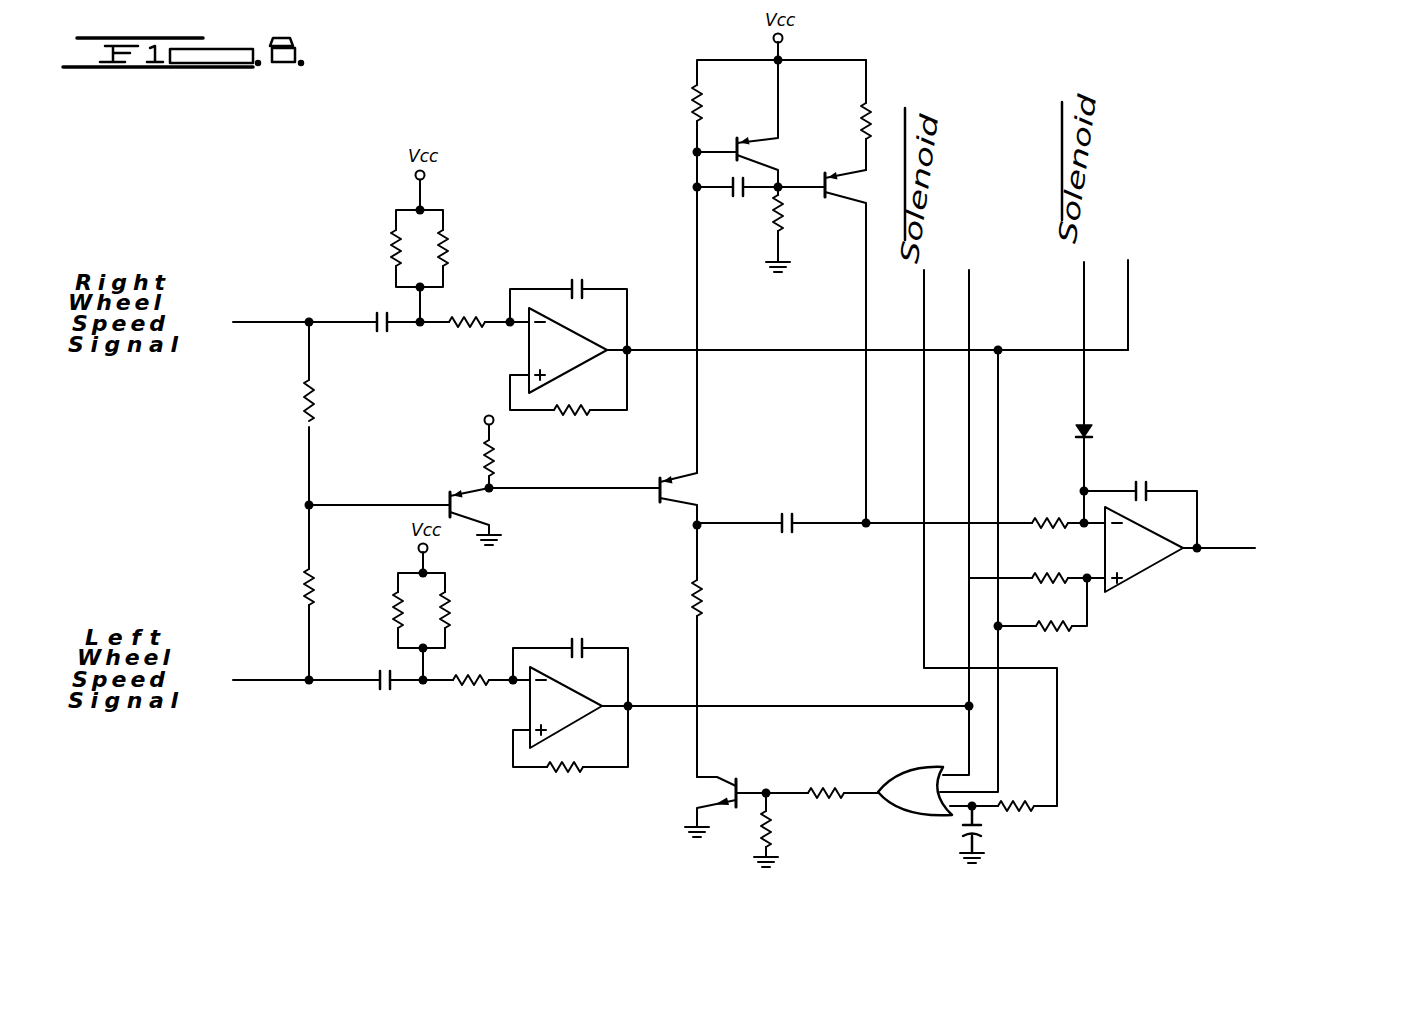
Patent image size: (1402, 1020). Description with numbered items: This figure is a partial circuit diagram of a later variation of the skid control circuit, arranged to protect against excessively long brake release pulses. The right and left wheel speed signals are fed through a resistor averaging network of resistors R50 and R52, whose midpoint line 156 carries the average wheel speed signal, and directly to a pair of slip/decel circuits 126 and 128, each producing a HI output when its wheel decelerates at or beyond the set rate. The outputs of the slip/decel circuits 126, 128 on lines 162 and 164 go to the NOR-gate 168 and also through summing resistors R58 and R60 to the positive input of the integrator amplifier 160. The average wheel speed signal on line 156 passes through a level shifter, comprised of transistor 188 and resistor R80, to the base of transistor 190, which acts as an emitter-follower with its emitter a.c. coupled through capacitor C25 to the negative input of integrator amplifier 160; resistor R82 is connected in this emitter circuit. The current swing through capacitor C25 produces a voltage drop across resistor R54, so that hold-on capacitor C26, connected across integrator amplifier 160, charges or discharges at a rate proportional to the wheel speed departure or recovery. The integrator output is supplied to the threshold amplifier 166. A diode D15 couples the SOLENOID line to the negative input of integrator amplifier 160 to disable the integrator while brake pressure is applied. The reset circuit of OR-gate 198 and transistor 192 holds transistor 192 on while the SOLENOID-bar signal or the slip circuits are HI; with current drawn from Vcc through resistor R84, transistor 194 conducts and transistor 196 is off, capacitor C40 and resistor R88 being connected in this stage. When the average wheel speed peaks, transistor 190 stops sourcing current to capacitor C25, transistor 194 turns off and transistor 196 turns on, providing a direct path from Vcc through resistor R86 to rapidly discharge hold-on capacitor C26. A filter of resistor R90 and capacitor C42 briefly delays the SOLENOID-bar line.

The slip/decel circuit 126 is at (600, 268).
The slip/decel circuit 128 is at (600, 628).
The resistor R50 is at (316, 400).
The resistor R52 is at (315, 580).
The average wheel speed signal line 156 is at (362, 500).
The resistor R80 is at (495, 460).
The transistor 188 is at (455, 512).
The transistor 190 is at (682, 488).
The resistor R82 is at (705, 590).
The capacitor C25 is at (800, 516).
The resistor R84 is at (695, 92).
The resistor R86 is at (867, 113).
The transistor 194 is at (752, 140).
The transistor 196 is at (836, 172).
The capacitor C40 is at (736, 198).
The resistor R88 is at (783, 222).
The output line 162 is at (765, 352).
The output line 164 is at (778, 706).
The NOR-gate 168 is at (1044, 396).
The diode D15 is at (1090, 430).
The hold-on capacitor C26 is at (1150, 486).
The integrator amplifier 160 is at (1140, 578).
The resistor R54 is at (1045, 478).
The summing resistor R60 is at (1062, 558).
The summing resistor R58 is at (1065, 629).
The threshold amplifier 166 is at (1296, 567).
The transistor 192 is at (720, 776).
The OR-gate 198 is at (905, 815).
The resistor R90 is at (1030, 815).
The capacitor C42 is at (985, 830).